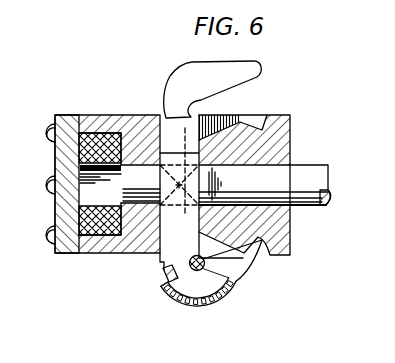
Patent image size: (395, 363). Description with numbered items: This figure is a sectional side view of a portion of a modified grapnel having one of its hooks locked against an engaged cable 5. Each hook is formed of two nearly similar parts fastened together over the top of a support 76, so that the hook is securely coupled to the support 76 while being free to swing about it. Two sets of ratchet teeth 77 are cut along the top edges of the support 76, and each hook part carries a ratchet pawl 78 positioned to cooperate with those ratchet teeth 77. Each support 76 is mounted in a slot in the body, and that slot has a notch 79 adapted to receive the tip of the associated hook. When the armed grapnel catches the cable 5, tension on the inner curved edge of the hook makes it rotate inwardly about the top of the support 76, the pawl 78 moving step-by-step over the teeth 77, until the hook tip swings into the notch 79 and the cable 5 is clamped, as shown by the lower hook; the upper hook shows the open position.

The cable 5 is at (191, 269).
The support 76 is at (160, 118).
The ratchet teeth 77 is at (166, 278).
The ratchet pawl 78 is at (193, 306).
The notch 79 is at (258, 120).